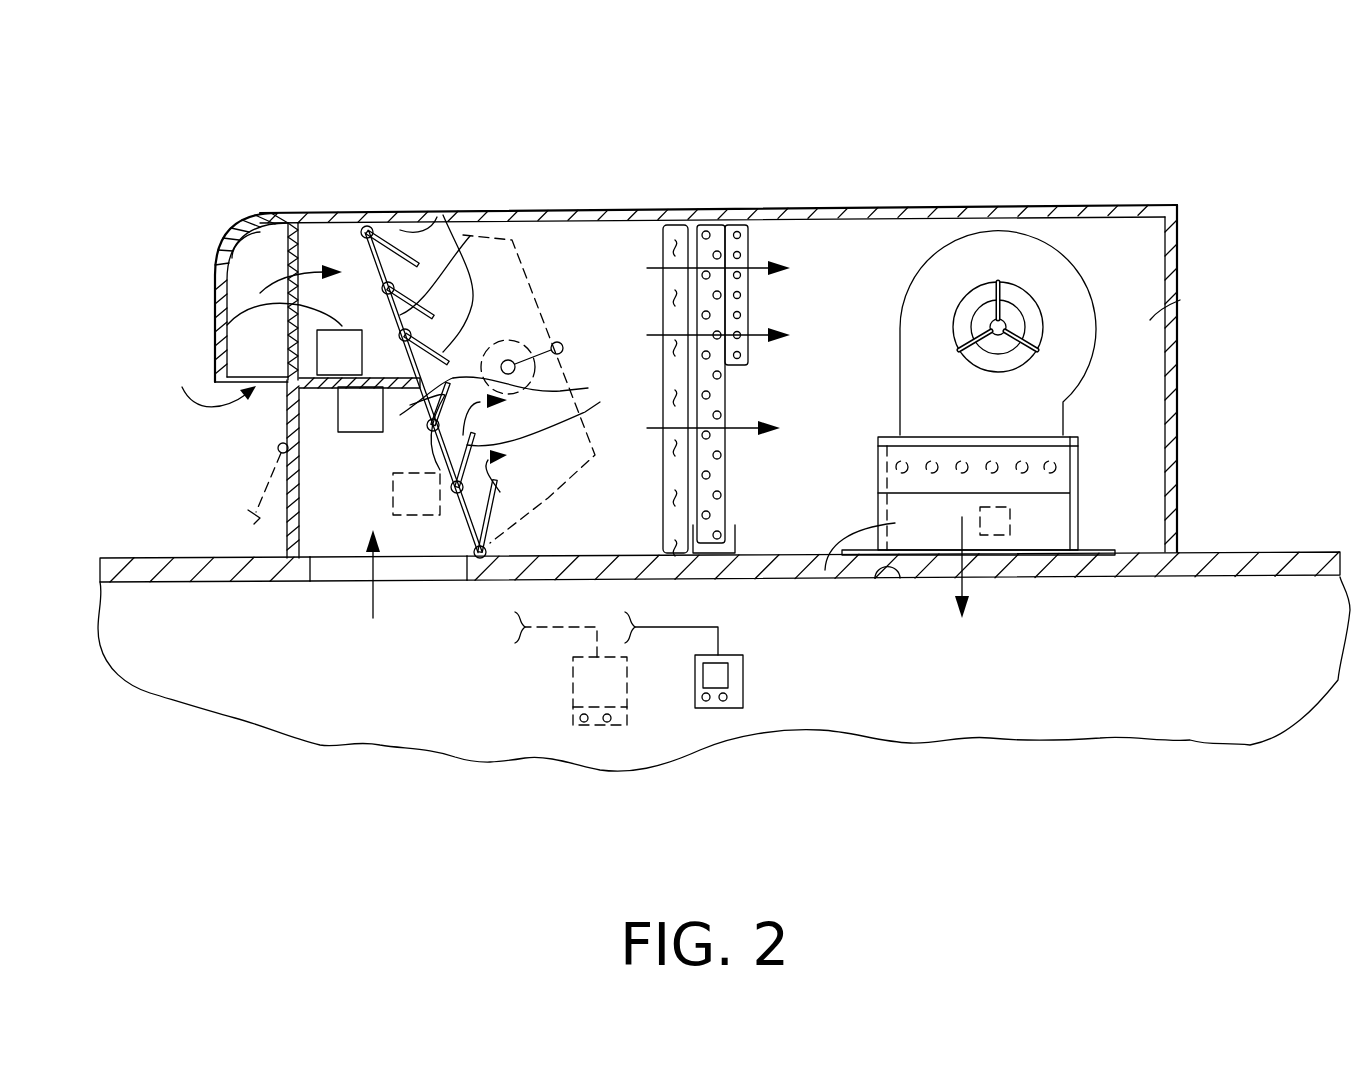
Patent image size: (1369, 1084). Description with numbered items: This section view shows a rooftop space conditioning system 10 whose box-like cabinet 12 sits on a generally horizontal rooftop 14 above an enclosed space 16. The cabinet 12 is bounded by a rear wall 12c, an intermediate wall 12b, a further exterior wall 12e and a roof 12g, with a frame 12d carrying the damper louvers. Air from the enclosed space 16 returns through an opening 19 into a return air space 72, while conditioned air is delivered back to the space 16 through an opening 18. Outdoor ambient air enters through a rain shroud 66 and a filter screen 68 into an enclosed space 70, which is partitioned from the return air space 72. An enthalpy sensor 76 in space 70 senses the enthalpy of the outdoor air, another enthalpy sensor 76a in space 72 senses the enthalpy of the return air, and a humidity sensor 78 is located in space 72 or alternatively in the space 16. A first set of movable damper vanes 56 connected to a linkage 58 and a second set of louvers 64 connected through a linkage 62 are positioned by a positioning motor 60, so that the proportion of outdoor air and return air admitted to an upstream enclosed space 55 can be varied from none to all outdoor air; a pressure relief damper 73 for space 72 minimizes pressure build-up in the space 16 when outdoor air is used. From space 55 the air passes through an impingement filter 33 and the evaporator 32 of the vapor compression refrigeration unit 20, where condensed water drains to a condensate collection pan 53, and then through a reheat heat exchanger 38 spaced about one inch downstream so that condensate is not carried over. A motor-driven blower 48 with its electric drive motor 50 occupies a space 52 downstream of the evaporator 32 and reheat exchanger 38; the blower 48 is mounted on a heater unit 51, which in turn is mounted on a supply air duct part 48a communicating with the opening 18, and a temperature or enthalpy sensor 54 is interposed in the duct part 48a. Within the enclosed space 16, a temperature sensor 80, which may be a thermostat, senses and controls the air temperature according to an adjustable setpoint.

The space conditioning system 10 is at (838, 165).
The cabinet 12 is at (1178, 239).
The intermediate wall 12b is at (1147, 322).
The cabinet rear wall 12c is at (247, 582).
The frame 12d is at (398, 583).
The wall 12e is at (1178, 368).
The roof 12g is at (1070, 207).
The rooftop 14 is at (1265, 555).
The enclosed space 16 is at (1180, 646).
The opening 18 is at (900, 578).
The opening 19 is at (447, 585).
The vapor compression refrigeration unit 20 is at (698, 210).
The evaporator 32 is at (678, 237).
The filter 33 is at (616, 237).
The reheat heat exchanger 38 is at (748, 305).
The blower 48 is at (937, 252).
The supply air duct part 48a is at (825, 570).
The electric drive motor 50 is at (1018, 303).
The heater unit 51 is at (878, 460).
The space 52 is at (860, 277).
The condensate collection pan 53 is at (735, 528).
The sensor 54 is at (1010, 525).
The enclosed space 55 is at (615, 291).
The damper vanes 56 is at (540, 407).
The linkage 58 is at (570, 478).
The positioning motor 60 is at (506, 358).
The linkage 62 is at (417, 235).
The louvers 64 is at (455, 270).
The rain shroud 66 is at (216, 262).
The filter screen 68 is at (255, 222).
The enclosed space 70 is at (325, 238).
The space 72 is at (350, 518).
The pressure relief damper 73 is at (246, 503).
The enthalpy sensor 76 is at (215, 327).
The enthalpy sensor 76a is at (432, 515).
The humidity sensor 78 is at (335, 428).
The temperature sensor 80 is at (728, 708).